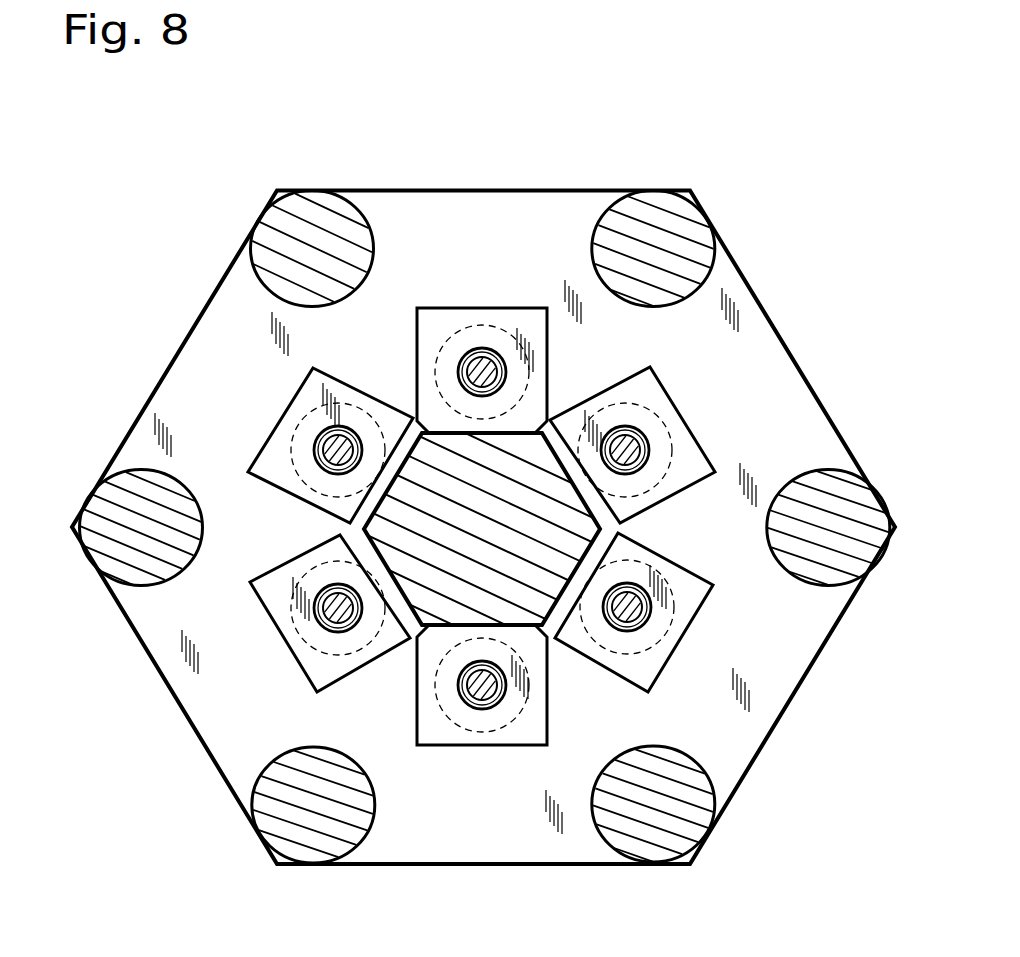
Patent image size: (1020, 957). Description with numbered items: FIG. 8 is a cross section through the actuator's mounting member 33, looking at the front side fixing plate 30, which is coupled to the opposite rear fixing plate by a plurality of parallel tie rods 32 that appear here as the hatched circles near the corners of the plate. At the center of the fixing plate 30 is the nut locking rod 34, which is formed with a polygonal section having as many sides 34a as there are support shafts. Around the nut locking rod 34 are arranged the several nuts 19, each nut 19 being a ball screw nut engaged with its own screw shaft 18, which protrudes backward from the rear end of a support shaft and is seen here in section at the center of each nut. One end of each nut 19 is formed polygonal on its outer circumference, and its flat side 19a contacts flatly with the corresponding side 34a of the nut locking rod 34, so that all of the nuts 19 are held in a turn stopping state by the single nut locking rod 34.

The screw shaft 18 is at (486, 362).
The nut 19 is at (453, 437).
The side of nut 19a is at (427, 343).
The front side fixing plate 30 is at (521, 200).
The tie rod 32 is at (320, 208).
The mounting member 33 is at (413, 188).
The nut locking rod 34 is at (477, 602).
The side of nut locking rod 34a is at (398, 485).